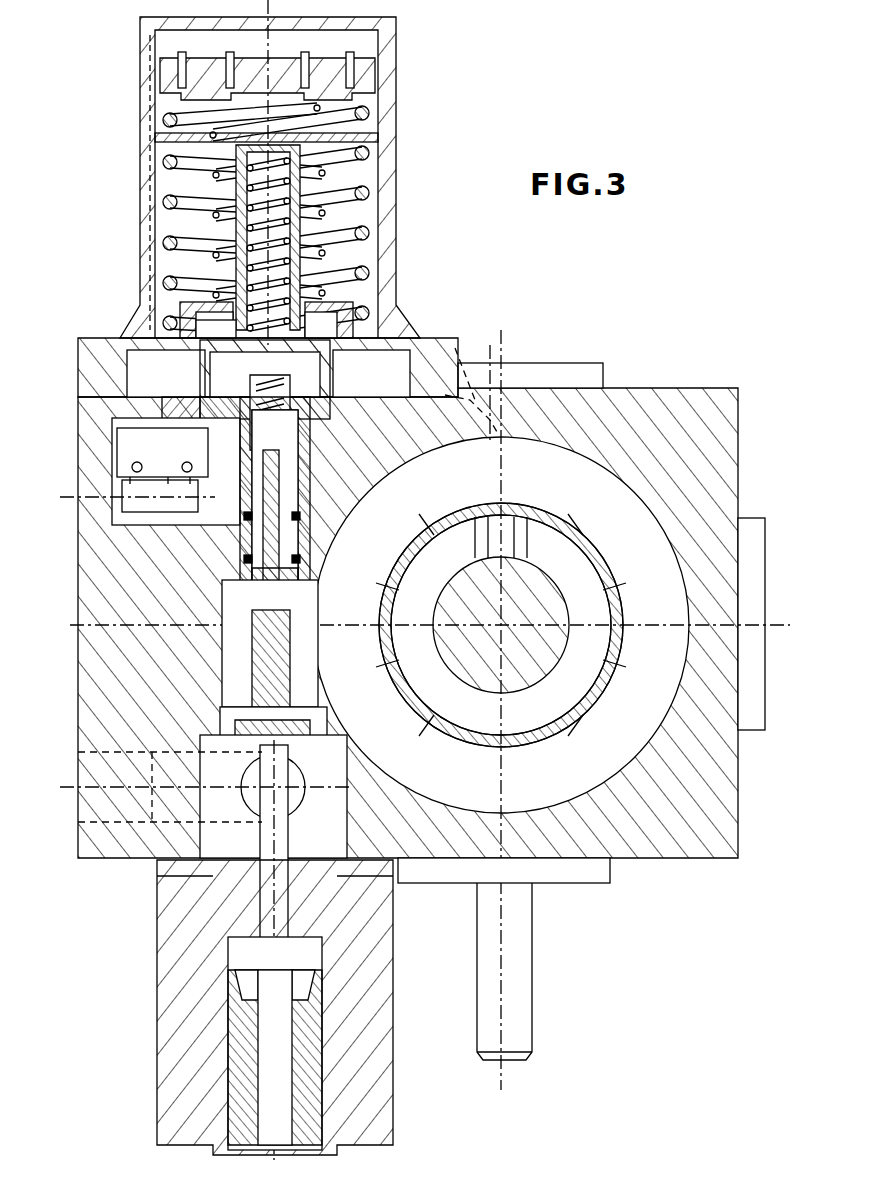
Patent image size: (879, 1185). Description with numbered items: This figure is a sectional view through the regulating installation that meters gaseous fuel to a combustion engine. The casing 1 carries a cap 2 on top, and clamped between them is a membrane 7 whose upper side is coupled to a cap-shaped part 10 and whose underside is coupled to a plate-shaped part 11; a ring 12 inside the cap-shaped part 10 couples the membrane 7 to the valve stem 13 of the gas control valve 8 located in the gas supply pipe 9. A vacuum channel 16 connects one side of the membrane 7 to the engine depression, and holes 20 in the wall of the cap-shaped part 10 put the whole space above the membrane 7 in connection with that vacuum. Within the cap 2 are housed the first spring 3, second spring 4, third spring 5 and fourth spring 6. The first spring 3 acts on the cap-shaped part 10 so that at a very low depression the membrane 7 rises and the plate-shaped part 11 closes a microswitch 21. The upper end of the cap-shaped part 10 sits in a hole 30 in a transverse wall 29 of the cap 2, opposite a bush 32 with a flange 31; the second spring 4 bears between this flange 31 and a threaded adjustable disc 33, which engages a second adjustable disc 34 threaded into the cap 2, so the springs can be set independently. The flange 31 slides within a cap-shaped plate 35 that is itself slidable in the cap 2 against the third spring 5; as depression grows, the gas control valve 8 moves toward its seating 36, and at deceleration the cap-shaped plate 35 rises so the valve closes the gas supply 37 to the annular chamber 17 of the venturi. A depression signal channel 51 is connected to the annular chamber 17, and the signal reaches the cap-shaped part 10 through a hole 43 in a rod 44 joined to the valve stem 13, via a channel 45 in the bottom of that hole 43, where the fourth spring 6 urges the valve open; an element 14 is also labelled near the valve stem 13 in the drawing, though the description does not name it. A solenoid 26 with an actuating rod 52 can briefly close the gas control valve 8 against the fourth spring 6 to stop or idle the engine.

The casing 1 is at (612, 392).
The cap 2 is at (392, 84).
The first spring 3 is at (170, 170).
The second spring 4 is at (302, 182).
The third spring 5 is at (366, 114).
The fourth spring 6 is at (240, 372).
The membrane 7 is at (162, 404).
The gas control valve 8 is at (255, 742).
The gas supply pipe 9 is at (245, 680).
The cap-shaped part 10 is at (330, 334).
The plate-shaped part 11 is at (492, 352).
The ring 12 is at (412, 366).
The valve stem 13 is at (280, 594).
The seal rings 14 is at (242, 576).
The vacuum channel 16 is at (497, 410).
The annular chamber 17 is at (628, 497).
The holes 20 is at (238, 360).
The microswitch 21 is at (113, 440).
The solenoid 26 is at (185, 925).
The transverse wall 29 is at (200, 330).
The hole 30 is at (345, 317).
The flange 31 is at (382, 300).
The bush 32 is at (166, 206).
The threaded adjustable disc 33 is at (378, 56).
The second adjustable disc 34 is at (216, 70).
The cap-shaped plate 35 is at (184, 316).
The seating 36 is at (245, 700).
The gas supply 37 is at (96, 790).
The hole 43 is at (252, 392).
The rod 44 is at (128, 470).
The channel 45 is at (124, 496).
The depression signal channel 51 is at (240, 562).
The actuating rod 52 is at (283, 862).